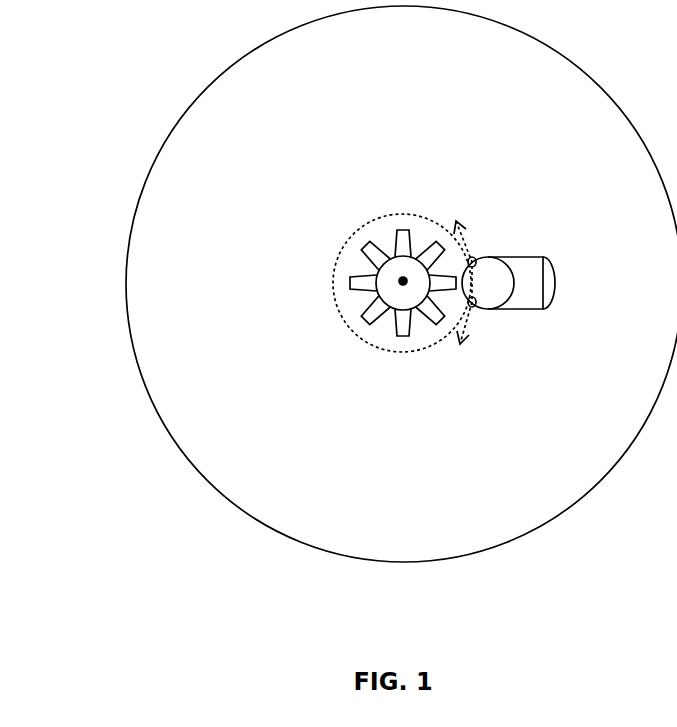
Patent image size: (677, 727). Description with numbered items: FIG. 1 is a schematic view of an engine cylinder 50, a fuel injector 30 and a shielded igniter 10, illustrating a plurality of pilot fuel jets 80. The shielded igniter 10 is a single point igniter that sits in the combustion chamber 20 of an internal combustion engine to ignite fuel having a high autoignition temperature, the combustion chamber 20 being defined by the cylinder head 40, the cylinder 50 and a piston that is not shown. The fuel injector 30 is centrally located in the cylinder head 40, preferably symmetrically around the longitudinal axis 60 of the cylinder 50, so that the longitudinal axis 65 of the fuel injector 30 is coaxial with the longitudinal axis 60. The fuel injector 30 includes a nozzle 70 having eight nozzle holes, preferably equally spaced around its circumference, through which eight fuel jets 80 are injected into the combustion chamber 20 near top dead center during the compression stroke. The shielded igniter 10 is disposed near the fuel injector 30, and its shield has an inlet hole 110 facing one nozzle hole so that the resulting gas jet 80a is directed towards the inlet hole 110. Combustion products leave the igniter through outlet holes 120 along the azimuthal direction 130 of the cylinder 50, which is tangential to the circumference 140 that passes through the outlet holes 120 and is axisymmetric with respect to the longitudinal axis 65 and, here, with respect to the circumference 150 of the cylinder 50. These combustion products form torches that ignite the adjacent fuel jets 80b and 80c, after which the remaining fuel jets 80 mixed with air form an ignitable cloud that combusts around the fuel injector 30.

The shielded igniter 10 is at (532, 312).
The combustion chamber 20 is at (185, 293).
The fuel injector 30 is at (374, 293).
The cylinder head 40 is at (262, 477).
The cylinder 50 is at (153, 403).
The longitudinal axis of cylinder 60 is at (394, 308).
The longitudinal axis of fuel injector 65 is at (402, 283).
The nozzle 70 is at (418, 322).
The fuel jets 80 is at (428, 235).
The gas jet 80a is at (443, 313).
The fuel jet 80b is at (443, 241).
The fuel jet 80c is at (439, 327).
The inlet hole 110 is at (476, 288).
The outlet holes 120 is at (475, 262).
The azimuthal direction 130 is at (473, 238).
The circumference 140 is at (340, 298).
The circumference of cylinder 150 is at (152, 168).